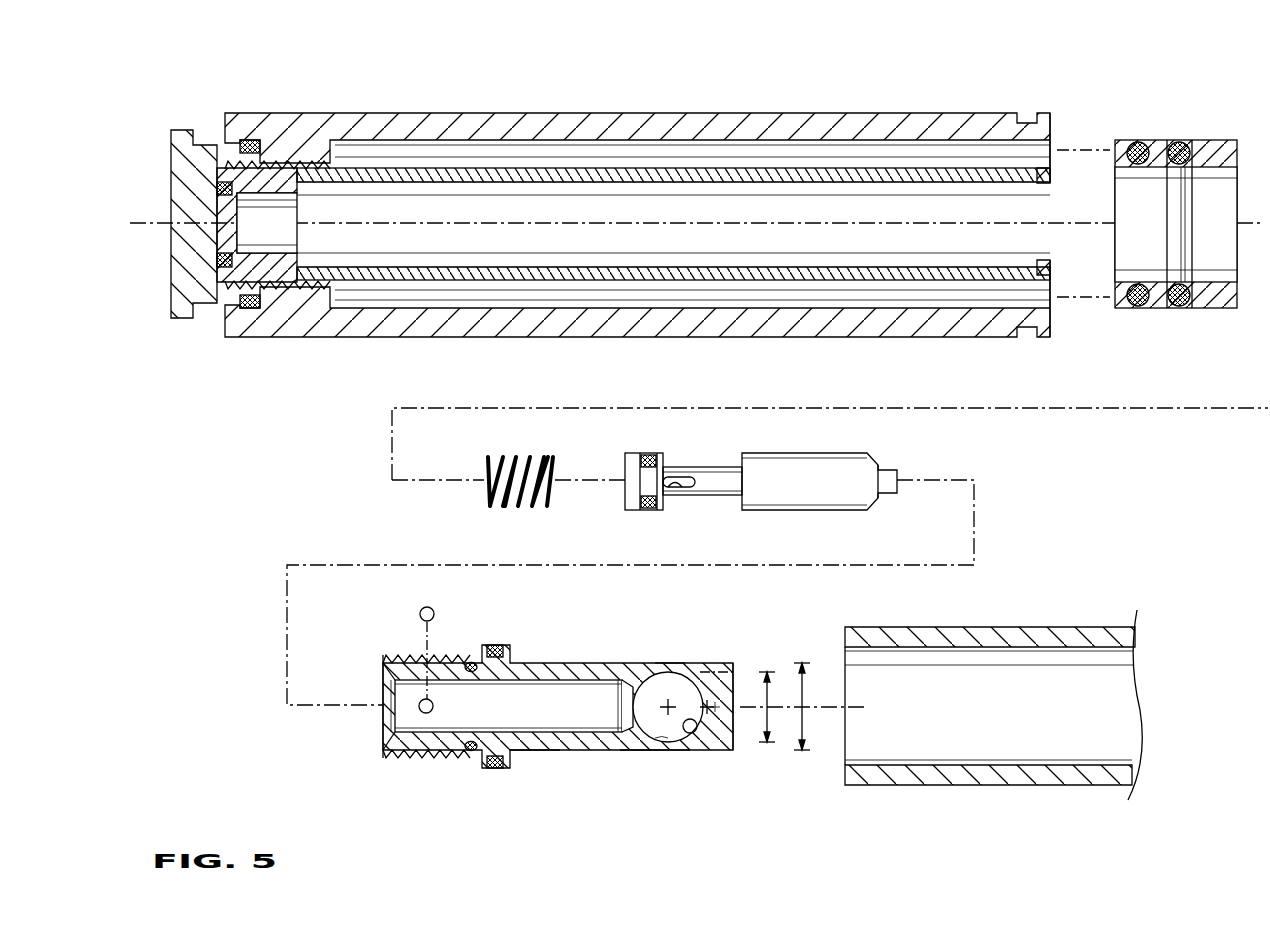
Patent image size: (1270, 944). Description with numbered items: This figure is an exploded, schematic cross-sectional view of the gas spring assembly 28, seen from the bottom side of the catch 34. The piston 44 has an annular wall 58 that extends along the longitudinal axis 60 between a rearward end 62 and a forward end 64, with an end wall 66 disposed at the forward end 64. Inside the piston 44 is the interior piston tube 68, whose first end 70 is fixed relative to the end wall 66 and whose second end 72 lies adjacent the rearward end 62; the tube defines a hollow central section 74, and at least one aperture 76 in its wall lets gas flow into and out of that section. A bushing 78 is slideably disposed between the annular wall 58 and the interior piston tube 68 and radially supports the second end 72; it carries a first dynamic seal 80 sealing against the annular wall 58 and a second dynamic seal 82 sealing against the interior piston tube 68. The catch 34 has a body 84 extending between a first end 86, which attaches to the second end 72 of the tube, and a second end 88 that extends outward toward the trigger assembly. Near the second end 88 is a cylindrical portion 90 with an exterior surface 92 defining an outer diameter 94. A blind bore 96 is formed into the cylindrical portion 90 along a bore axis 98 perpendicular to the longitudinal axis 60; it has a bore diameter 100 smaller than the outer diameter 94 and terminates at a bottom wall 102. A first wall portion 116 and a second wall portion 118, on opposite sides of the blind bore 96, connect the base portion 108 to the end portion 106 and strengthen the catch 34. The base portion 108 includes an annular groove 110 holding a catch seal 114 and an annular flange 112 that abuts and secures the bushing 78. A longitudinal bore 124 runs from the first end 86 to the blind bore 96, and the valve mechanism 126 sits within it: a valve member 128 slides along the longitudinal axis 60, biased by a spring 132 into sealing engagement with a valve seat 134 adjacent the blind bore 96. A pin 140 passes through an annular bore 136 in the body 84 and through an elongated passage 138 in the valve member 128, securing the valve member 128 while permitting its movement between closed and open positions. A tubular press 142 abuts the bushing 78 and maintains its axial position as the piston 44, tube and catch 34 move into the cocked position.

The gas spring assembly 28 is at (1082, 78).
The catch 34 is at (540, 752).
The piston 44 is at (682, 113).
The annular wall 58 is at (575, 128).
The longitudinal axis 60 is at (152, 215).
The rearward end 62 is at (1052, 322).
The forward end 64 is at (228, 322).
The end wall 66 is at (185, 283).
The interior piston tube 68 is at (802, 173).
The first end 70 is at (215, 270).
The second end 72 is at (1050, 270).
The hollow central section 74 is at (610, 215).
The aperture 76 is at (358, 178).
The bushing 78 is at (1215, 142).
The first dynamic seal 80 is at (1137, 142).
The second dynamic seal 82 is at (1178, 302).
The body 84 is at (544, 664).
The first end 86 is at (383, 748).
The second end 88 is at (733, 740).
The cylindrical portion 90 is at (640, 752).
The exterior surface 92 is at (688, 668).
The outer diameter 94 is at (803, 690).
The blind bore 96 is at (690, 730).
The bore axis 98 is at (660, 698).
The bore diameter 100 is at (767, 690).
The bottom wall 102 is at (660, 732).
The end portion 106 is at (712, 735).
The base portion 108 is at (427, 747).
The annular groove 110 is at (520, 757).
The annular flange 112 is at (476, 762).
The catch seal 114 is at (493, 647).
The first wall portion 116 is at (668, 666).
The second wall portion 118 is at (668, 748).
The longitudinal bore 124 is at (583, 735).
The valve mechanism 126 is at (730, 453).
The valve member 128 is at (818, 475).
The spring 132 is at (505, 455).
The valve seat 134 is at (627, 696).
The annular bore 136 is at (433, 708).
The elongated passage 138 is at (678, 490).
The pin 140 is at (421, 612).
The tubular press 142 is at (970, 628).